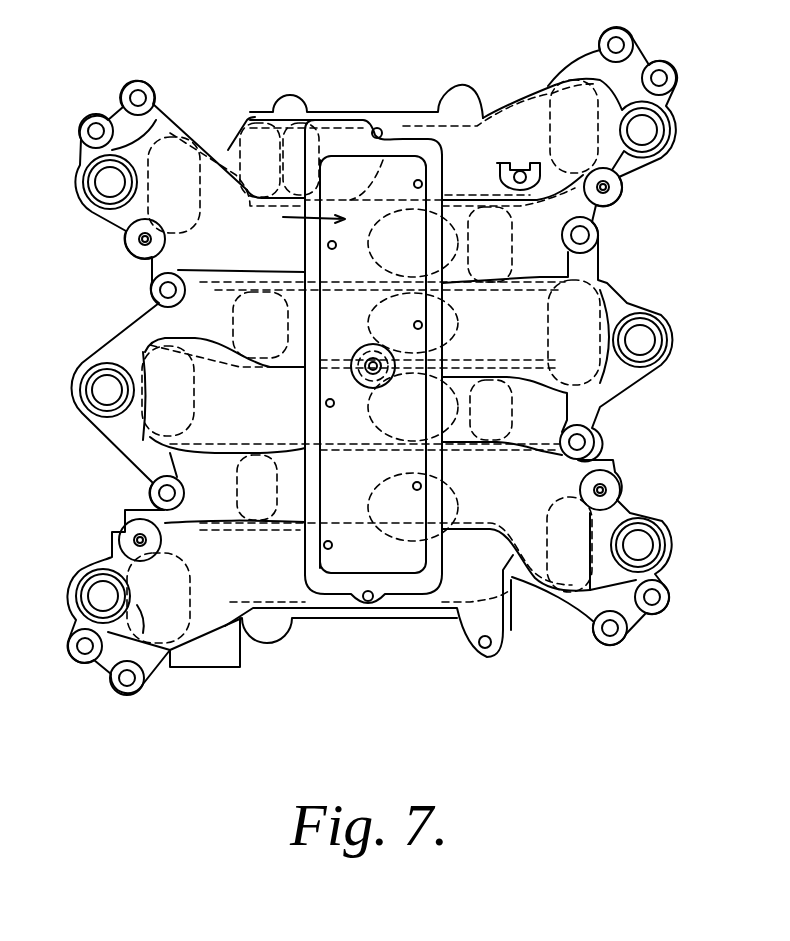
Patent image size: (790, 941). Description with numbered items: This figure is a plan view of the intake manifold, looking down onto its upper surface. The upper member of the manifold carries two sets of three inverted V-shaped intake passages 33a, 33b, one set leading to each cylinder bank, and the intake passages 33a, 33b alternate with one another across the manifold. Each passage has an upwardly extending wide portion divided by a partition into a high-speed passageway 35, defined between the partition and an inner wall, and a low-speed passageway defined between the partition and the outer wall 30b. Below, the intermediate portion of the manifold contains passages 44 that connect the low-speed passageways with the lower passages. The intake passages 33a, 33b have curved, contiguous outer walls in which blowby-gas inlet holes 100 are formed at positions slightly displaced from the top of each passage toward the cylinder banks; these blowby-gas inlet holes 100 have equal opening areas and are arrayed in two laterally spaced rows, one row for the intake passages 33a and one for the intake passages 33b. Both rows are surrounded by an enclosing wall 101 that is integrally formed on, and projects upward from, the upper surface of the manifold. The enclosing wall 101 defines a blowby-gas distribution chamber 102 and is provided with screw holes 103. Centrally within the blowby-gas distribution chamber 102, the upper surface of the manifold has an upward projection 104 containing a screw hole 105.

The outer wall 30b is at (532, 92).
The intake passages 33a is at (142, 350).
The intake passages 33b is at (578, 268).
The high-speed passageway 35 is at (337, 127).
The passages 44 is at (243, 117).
The blowby-gas inlet holes 100 is at (423, 183).
The enclosing wall 101 is at (438, 345).
The blowby-gas distribution chamber 102 is at (287, 224).
The screw holes 103 is at (378, 128).
The upward projection 104 is at (375, 355).
The screw hole 105 is at (375, 373).